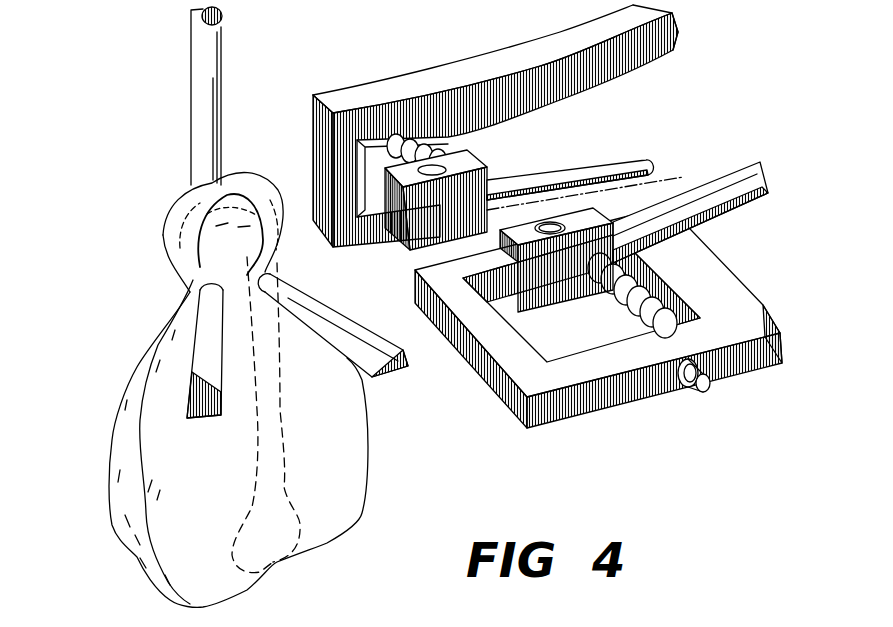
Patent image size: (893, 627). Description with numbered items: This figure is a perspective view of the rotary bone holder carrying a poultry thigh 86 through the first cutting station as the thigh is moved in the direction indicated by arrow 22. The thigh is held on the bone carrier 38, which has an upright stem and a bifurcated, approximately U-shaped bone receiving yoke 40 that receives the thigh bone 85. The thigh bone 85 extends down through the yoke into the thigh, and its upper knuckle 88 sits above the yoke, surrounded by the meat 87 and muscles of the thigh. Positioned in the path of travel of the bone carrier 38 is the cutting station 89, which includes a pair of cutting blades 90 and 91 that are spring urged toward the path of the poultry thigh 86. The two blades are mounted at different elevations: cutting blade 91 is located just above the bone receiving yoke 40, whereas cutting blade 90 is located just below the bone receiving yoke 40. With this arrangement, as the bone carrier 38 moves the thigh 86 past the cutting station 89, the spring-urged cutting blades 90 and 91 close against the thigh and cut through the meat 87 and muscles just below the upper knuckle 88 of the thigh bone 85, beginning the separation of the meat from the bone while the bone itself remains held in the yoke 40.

The arrow 22 is at (157, 263).
The bone carrier 38 is at (184, 184).
The bone receiving yoke 40 is at (318, 289).
The thigh bone 85 is at (281, 420).
The poultry thigh 86 is at (138, 363).
The meat 87 is at (148, 440).
The upper knuckle 88 is at (284, 162).
The cutting station 89 is at (726, 250).
The cutting blade 90 is at (690, 163).
The cutting blade 91 is at (715, 183).